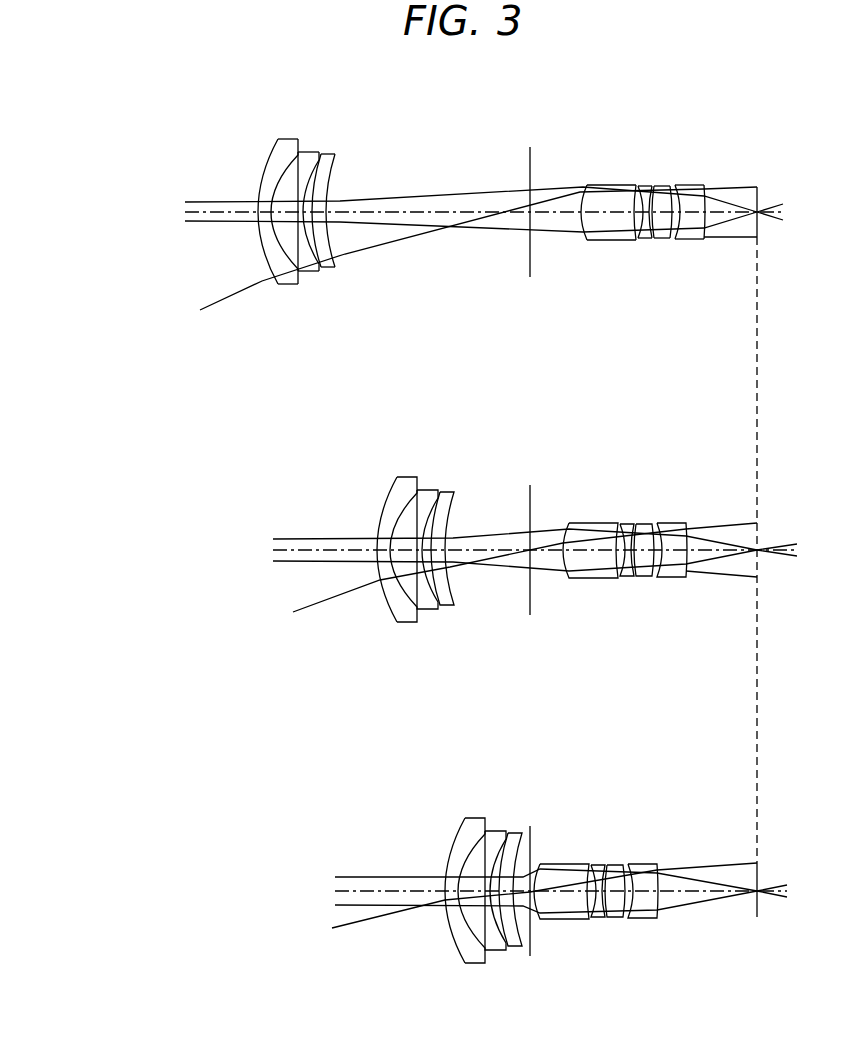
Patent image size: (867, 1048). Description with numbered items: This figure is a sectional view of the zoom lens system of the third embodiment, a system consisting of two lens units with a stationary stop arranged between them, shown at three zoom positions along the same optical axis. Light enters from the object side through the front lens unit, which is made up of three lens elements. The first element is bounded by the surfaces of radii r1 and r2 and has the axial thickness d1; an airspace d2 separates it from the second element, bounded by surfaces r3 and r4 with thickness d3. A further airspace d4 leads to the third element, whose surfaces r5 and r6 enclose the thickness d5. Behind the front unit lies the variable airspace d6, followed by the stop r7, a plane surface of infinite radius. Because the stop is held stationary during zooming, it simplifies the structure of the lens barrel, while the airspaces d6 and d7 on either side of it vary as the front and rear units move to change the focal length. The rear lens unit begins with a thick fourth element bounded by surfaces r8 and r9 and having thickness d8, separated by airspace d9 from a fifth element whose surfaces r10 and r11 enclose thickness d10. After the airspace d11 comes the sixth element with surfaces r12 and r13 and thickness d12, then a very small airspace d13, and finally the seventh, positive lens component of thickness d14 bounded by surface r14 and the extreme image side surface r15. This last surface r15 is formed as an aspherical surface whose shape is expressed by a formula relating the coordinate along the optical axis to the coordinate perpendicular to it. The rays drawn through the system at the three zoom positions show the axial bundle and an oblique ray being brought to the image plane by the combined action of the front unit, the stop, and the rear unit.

The radius of curvature of first lens surface r1 is at (277, 142).
The radius of curvature of second lens surface r2 is at (289, 140).
The radius of curvature of third lens surface r3 is at (300, 151).
The radius of curvature of fourth lens surface r4 is at (318, 159).
The radius of curvature of fifth lens surface r5 is at (330, 154).
The radius of curvature of sixth lens surface r6 is at (336, 156).
The stop r7 is at (529, 165).
The radius of curvature of eighth lens surface r8 is at (580, 185).
The radius of curvature of ninth lens surface r9 is at (628, 192).
The radius of curvature of tenth lens surface r10 is at (640, 196).
The radius of curvature of eleventh lens surface r11 is at (648, 195).
The radius of curvature of twelfth lens surface r12 is at (660, 196).
The radius of curvature of thirteenth lens surface r13 is at (671, 192).
The radius of curvature of fourteenth lens surface r14 is at (680, 196).
The aspherical surface r15 is at (704, 186).
The thickness of first lens element d1 is at (258, 222).
The airspace between first and second lens elements d2 is at (280, 228).
The thickness of second lens element d3 is at (305, 272).
The airspace between second and third lens elements d4 is at (321, 272).
The thickness of third lens element d5 is at (343, 258).
The variable airspace between front lens unit and stop d6 is at (432, 218).
The variable airspace between stop and rear lens unit d7 is at (566, 215).
The thickness of fourth lens element d8 is at (598, 215).
The airspace between fourth and fifth lens elements d9 is at (630, 215).
The thickness of fifth lens element d10 is at (645, 215).
The airspace between fifth and sixth lens elements d11 is at (653, 215).
The thickness of sixth lens element d12 is at (662, 215).
The airspace between sixth and seventh lens elements d13 is at (673, 215).
The thickness of seventh lens element d14 is at (690, 215).